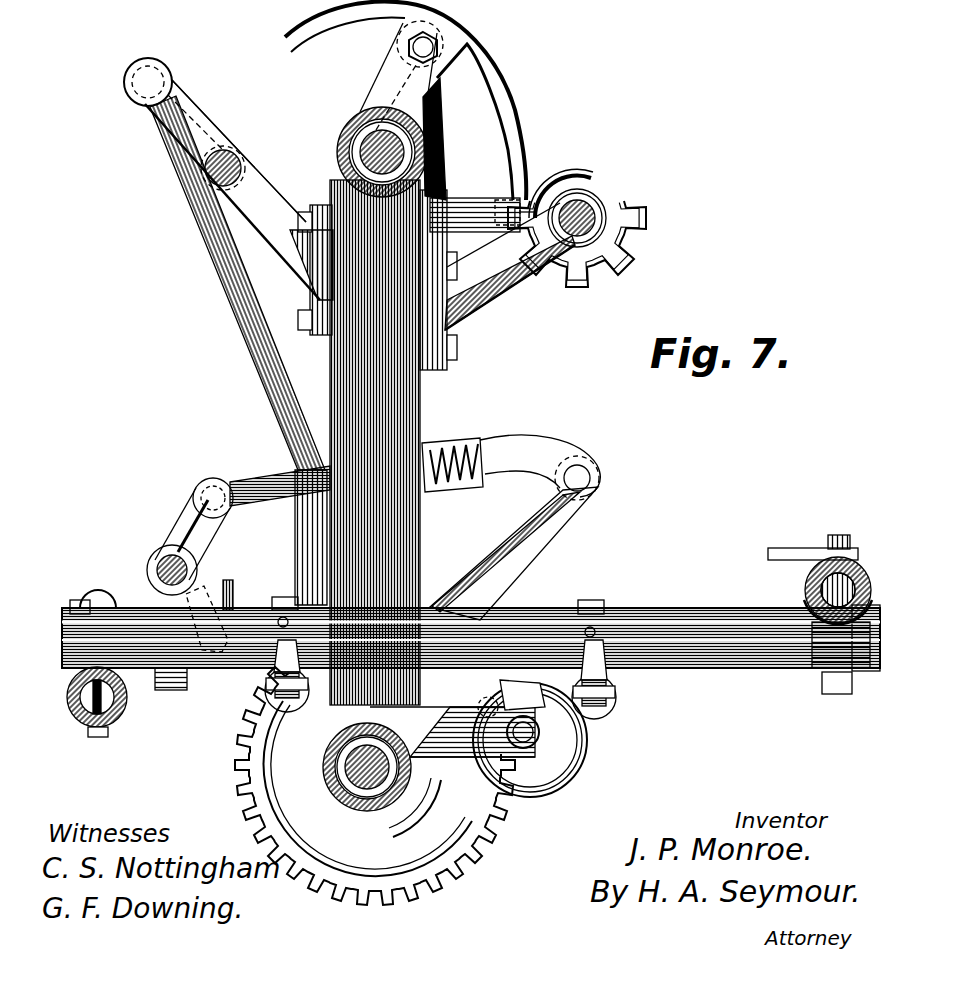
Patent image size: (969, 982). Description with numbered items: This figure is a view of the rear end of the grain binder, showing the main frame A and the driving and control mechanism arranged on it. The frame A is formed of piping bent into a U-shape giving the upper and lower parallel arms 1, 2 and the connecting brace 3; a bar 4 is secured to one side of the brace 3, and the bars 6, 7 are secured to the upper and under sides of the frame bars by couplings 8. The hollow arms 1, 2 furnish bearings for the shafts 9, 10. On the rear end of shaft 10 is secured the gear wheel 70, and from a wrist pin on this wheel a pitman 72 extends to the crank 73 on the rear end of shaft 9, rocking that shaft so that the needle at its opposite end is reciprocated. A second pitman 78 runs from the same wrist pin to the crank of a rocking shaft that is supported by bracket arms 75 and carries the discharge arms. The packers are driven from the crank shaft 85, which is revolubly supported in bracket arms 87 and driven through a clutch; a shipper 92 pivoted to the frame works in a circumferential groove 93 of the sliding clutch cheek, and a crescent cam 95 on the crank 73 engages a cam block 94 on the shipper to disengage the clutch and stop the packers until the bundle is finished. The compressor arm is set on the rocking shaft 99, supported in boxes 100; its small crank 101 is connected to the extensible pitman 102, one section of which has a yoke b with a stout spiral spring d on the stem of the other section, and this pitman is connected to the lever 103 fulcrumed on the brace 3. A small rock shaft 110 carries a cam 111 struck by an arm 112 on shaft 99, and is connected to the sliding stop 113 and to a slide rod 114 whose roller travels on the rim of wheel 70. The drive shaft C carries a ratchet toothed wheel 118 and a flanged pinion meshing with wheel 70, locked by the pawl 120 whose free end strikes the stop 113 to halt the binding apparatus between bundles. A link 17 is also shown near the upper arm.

The upper arm 1 is at (343, 152).
The lower arm 2 is at (358, 803).
The connecting brace 3 is at (418, 413).
The bar 4 is at (471, 652).
The bar 6 is at (804, 590).
The bar 7 is at (116, 712).
The coupling 8 is at (806, 608).
The rocking shaft 9 is at (405, 148).
The shaft 10 is at (345, 772).
The link 17 is at (205, 122).
The gear wheel 70 is at (250, 752).
The pitman 72 is at (432, 178).
The crank 73 is at (395, 78).
The bracket arm 75 is at (295, 212).
The pitman 78 is at (238, 350).
The crank shaft 85 is at (600, 213).
The bracket arm 87 is at (510, 282).
The shipper 92 is at (548, 176).
The circumferential groove 93 is at (606, 228).
The cam block 94 is at (498, 220).
The crescent cam 95 is at (509, 80).
The rocking shaft 99 is at (160, 560).
The box 100 is at (160, 596).
The crank 101 is at (214, 536).
The pitman 102 is at (280, 479).
The lever 103 is at (548, 534).
The rock shaft 110 is at (516, 620).
The cam 111 is at (247, 588).
The arm 112 is at (212, 662).
The sliding stop 113 is at (610, 706).
The slide rod 114 is at (292, 665).
The ratchet toothed wheel 118 is at (532, 788).
The pawl 120 is at (529, 695).
The main frame A is at (436, 526).
The yoke b is at (452, 452).
The drive shaft C is at (523, 732).
The spiral spring d is at (462, 476).